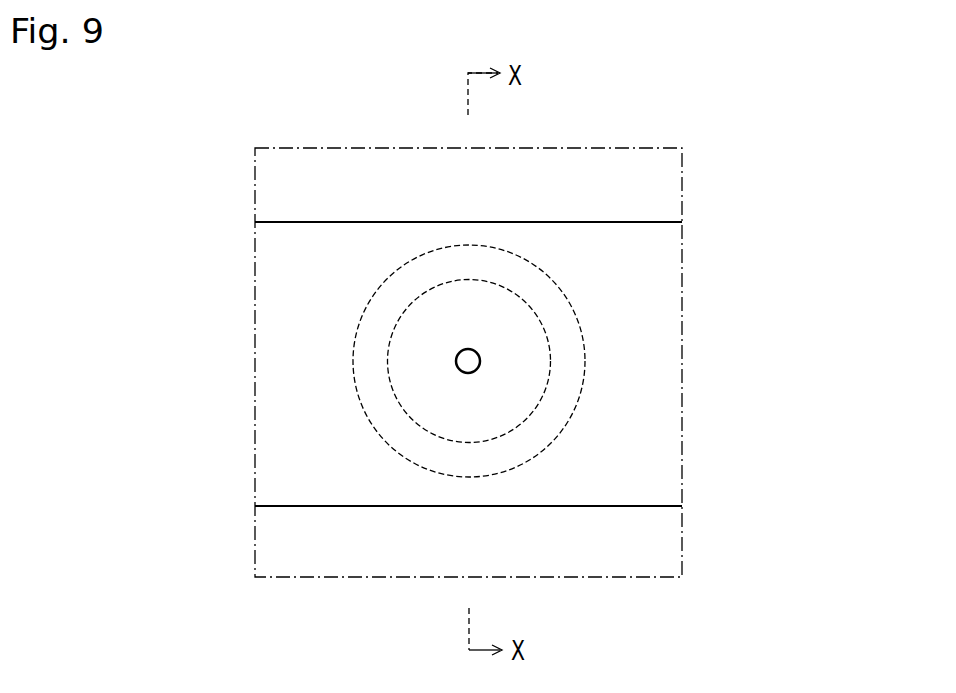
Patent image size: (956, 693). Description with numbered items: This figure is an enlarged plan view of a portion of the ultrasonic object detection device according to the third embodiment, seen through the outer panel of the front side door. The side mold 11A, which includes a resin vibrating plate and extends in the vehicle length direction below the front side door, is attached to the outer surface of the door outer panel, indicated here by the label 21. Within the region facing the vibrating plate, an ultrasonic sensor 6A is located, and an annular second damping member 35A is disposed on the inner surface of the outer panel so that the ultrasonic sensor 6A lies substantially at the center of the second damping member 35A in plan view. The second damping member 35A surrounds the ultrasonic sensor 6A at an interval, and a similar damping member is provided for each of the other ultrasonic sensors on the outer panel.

The ultrasonic sensor 6A is at (455, 362).
The side mold 11A is at (670, 433).
The strip member (4) 21 is at (643, 205).
The second damping member 35A is at (568, 335).